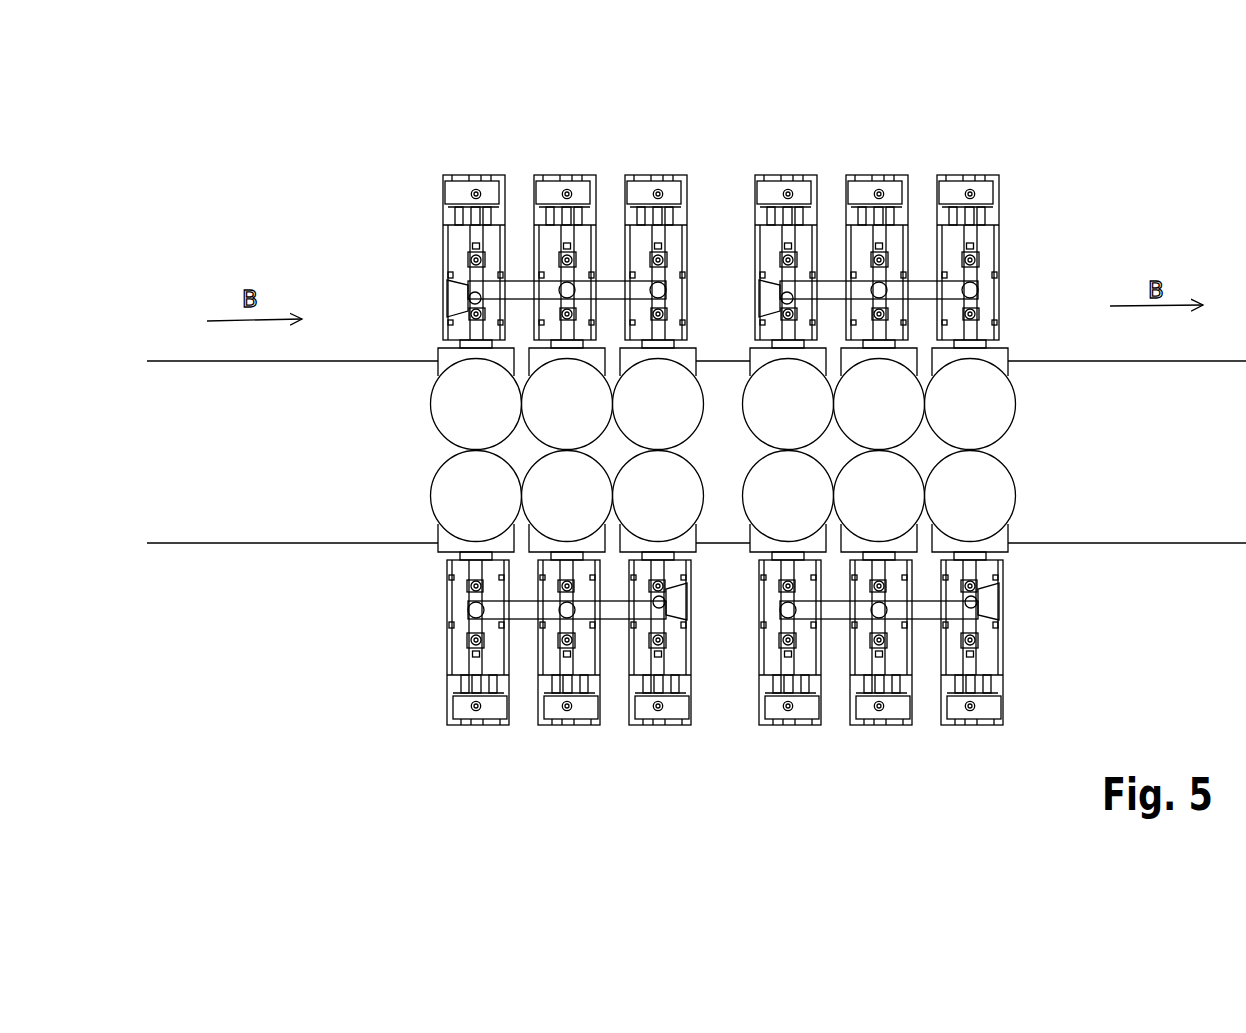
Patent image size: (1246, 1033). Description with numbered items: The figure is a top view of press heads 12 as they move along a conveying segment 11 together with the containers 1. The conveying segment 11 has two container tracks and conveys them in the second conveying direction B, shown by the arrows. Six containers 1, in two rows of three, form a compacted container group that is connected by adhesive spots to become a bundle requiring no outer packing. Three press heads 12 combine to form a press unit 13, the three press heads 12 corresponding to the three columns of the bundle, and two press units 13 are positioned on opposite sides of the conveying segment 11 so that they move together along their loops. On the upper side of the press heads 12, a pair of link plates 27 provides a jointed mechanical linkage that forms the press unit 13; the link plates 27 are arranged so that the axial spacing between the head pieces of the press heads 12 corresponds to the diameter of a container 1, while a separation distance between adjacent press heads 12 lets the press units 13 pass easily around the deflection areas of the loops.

The container 1 is at (467, 478).
The conveying segment 11 is at (208, 502).
The press head 12 is at (457, 238).
The press unit 13 is at (702, 448).
The link plate 27 is at (619, 292).